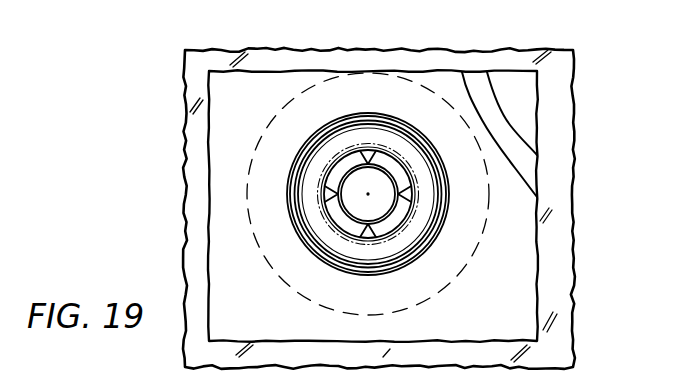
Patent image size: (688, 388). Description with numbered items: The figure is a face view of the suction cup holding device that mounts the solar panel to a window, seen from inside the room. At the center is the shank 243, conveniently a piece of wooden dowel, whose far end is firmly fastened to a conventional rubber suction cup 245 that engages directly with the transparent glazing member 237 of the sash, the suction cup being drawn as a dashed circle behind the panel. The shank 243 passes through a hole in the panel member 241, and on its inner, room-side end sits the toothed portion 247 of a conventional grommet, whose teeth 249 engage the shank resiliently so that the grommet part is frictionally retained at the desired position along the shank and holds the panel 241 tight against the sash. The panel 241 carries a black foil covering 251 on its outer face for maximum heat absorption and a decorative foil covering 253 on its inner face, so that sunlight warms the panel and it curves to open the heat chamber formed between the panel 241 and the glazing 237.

The glazing member 237 is at (567, 291).
The foil covering 251 is at (530, 92).
The panel member 241 is at (530, 158).
The foil covering 253 is at (520, 198).
The suction cup 245 is at (459, 274).
The toothed portion 247 is at (313, 160).
The shank 243 is at (381, 180).
The teeth 249 is at (323, 200).